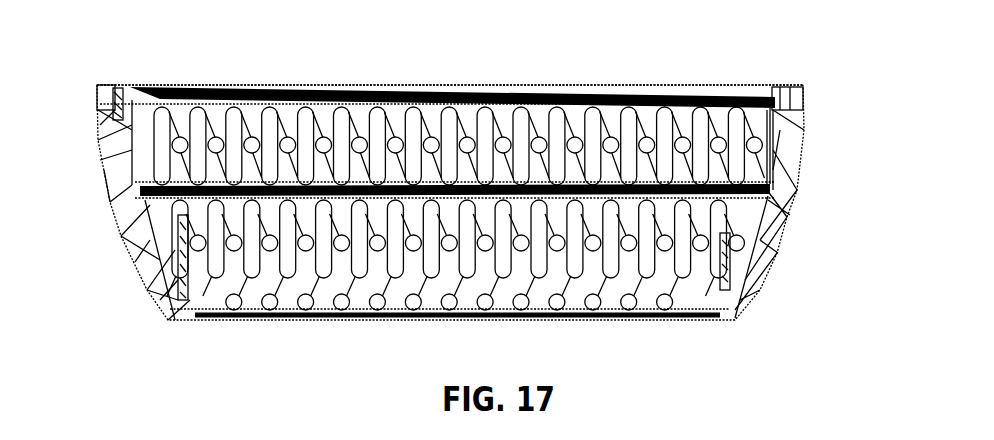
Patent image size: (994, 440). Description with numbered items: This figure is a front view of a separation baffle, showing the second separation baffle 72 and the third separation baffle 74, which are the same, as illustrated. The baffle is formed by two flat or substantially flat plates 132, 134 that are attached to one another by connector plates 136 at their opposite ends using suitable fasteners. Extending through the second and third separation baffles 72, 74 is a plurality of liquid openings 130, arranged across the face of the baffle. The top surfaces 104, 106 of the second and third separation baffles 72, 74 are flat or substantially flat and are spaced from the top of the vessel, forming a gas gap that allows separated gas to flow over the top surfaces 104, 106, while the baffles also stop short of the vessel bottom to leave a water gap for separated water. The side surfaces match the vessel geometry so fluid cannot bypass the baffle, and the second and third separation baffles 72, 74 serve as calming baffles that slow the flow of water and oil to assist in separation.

The second separation baffle 72 is at (813, 62).
The third separation baffle 74 is at (450, 202).
The top surface 104 is at (452, 85).
The top surface 106 is at (450, 94).
The liquid openings 130 is at (700, 113).
The plate 132 is at (133, 88).
The plate 134 is at (165, 222).
The connector plates 136 is at (112, 155).